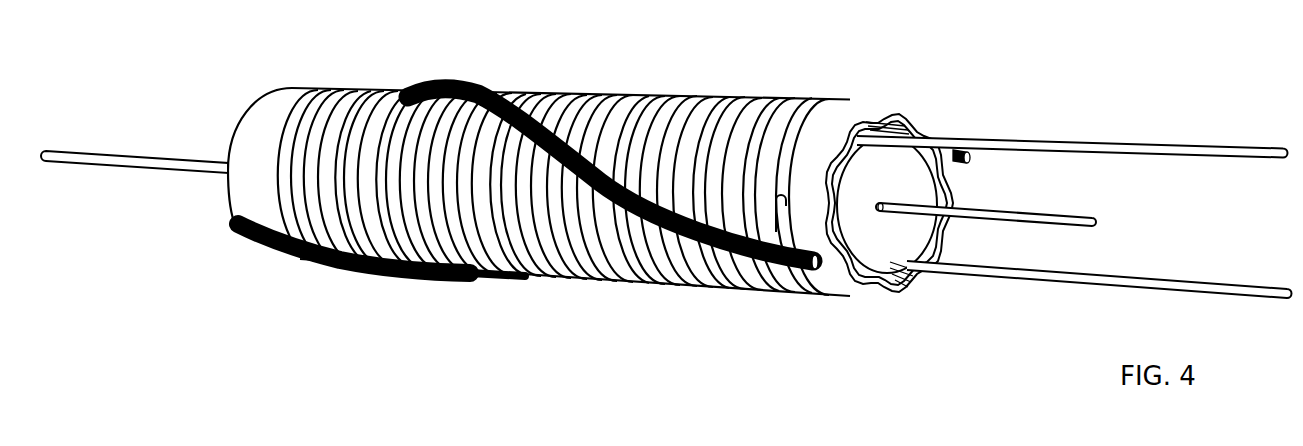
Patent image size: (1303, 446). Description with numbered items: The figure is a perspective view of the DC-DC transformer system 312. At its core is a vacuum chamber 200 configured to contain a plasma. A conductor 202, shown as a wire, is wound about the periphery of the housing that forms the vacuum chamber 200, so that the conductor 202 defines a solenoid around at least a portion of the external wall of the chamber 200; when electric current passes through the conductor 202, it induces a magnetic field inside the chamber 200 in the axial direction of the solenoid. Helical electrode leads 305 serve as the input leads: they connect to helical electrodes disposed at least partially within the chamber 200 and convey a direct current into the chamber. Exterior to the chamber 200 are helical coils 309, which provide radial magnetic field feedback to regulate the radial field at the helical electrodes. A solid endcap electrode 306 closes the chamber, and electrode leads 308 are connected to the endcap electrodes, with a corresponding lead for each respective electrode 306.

The vacuum chamber 200 is at (903, 110).
The conductor 202 is at (657, 112).
The helical electrode leads 305 is at (990, 138).
The endcap electrode 306 is at (908, 292).
The electrode leads 308 is at (147, 152).
The helical coils 309 is at (971, 160).
The DC-DC transformer system 312 is at (414, 42).